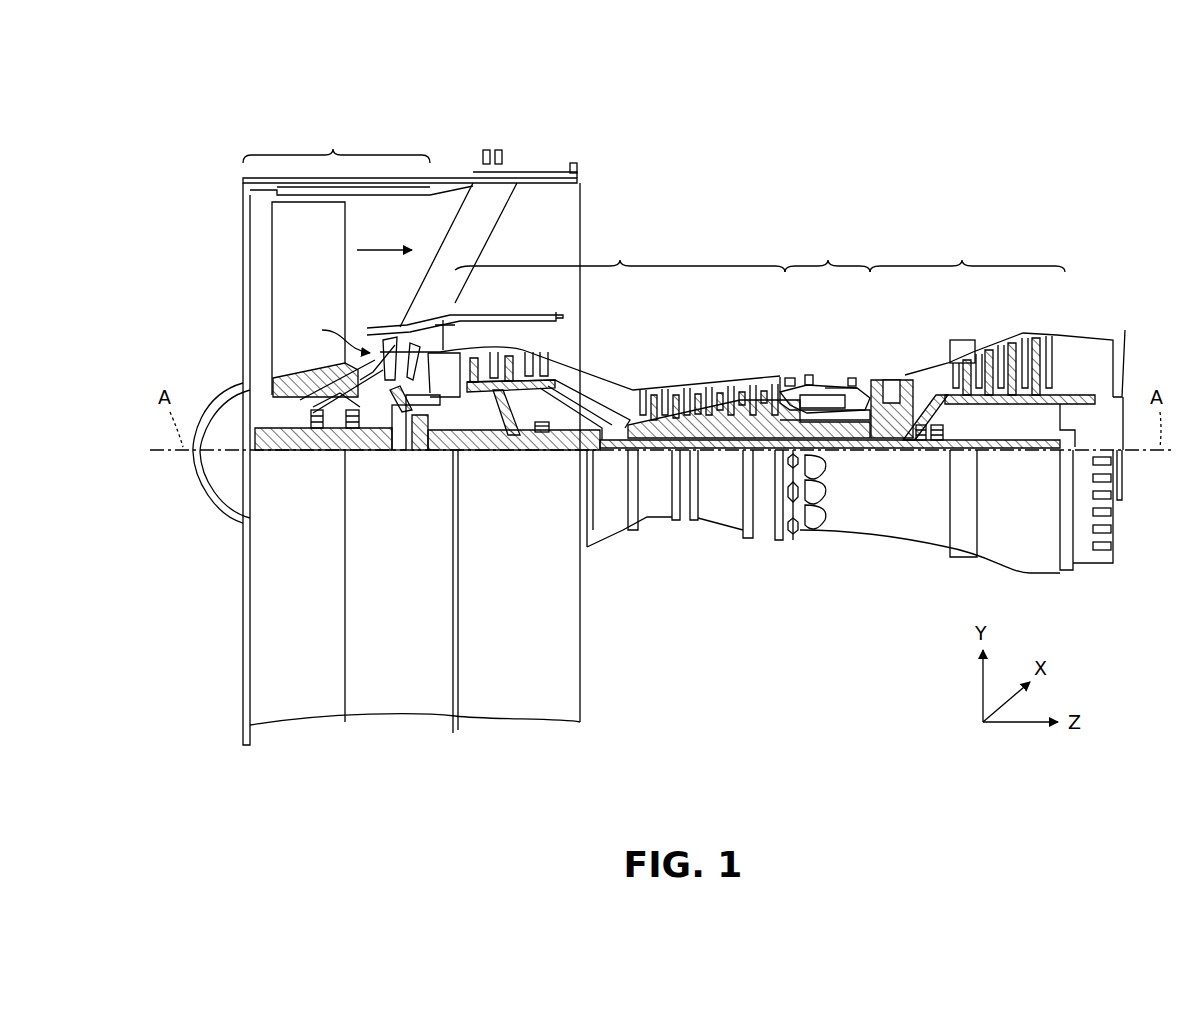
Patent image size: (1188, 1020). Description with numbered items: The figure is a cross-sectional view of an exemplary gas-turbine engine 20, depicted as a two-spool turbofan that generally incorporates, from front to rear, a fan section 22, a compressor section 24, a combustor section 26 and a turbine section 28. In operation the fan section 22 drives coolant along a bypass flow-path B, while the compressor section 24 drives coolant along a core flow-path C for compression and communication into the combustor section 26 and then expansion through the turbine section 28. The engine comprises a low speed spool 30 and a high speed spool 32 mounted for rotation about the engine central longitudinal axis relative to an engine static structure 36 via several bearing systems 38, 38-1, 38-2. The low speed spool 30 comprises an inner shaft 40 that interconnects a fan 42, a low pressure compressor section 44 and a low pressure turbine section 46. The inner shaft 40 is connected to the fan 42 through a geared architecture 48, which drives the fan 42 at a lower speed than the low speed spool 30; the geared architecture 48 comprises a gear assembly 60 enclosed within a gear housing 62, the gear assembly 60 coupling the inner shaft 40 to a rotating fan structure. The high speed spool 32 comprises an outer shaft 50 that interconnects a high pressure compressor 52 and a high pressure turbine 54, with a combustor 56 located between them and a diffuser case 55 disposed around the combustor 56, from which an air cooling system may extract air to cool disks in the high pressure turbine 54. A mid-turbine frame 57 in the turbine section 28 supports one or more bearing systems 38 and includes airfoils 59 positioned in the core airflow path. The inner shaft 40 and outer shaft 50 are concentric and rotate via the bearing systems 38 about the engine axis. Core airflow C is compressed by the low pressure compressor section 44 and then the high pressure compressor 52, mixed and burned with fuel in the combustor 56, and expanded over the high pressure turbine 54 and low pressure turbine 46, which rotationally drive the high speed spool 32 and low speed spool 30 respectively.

The gas-turbine engine 20 is at (868, 192).
The fan section 22 is at (380, 224).
The compressor section 24 is at (620, 253).
The combustor section 26 is at (827, 253).
The turbine section 28 is at (967, 253).
The low speed spool 30 is at (727, 462).
The high speed spool 32 is at (776, 398).
The engine static structure 36 is at (398, 700).
The bearing system 38 is at (938, 413).
The bearing system 38-1 is at (310, 452).
The bearing system 38-2 is at (540, 454).
The inner shaft 40 is at (604, 468).
The fan 42 is at (365, 467).
The low pressure compressor section 44 is at (523, 355).
The low pressure turbine section 46 is at (1000, 332).
The geared architecture 48 is at (413, 462).
The outer shaft 50 is at (822, 432).
The high pressure compressor 52 is at (735, 410).
The high pressure turbine 54 is at (888, 378).
The diffuser case 55 is at (820, 380).
The combustor 56 is at (834, 388).
The mid-turbine frame 57 is at (933, 375).
The airfoils 59 is at (948, 358).
The gear assembly 60 is at (408, 454).
The gear housing 62 is at (423, 408).
The bypass flow-path B is at (385, 255).
The core flow-path C is at (336, 336).